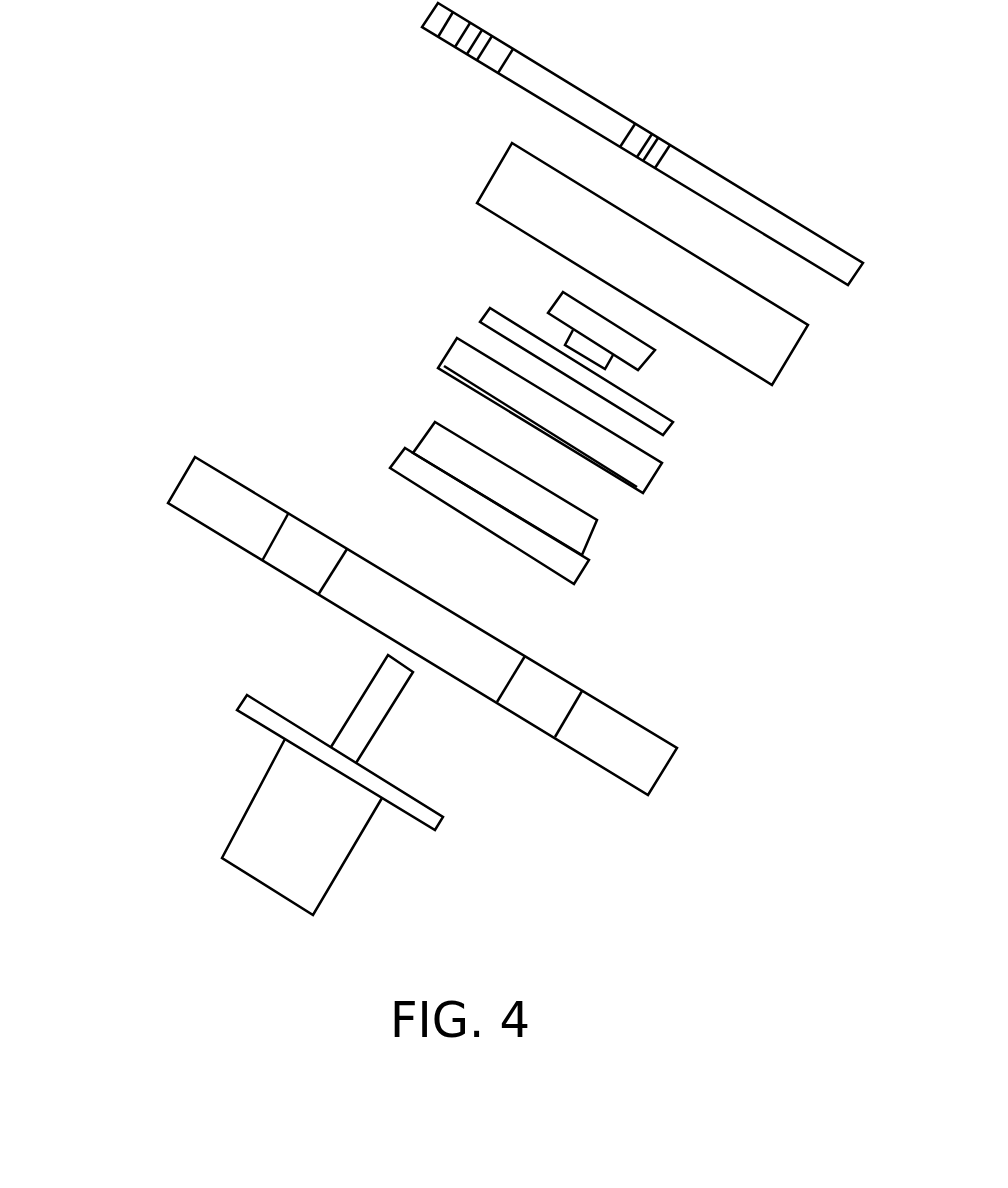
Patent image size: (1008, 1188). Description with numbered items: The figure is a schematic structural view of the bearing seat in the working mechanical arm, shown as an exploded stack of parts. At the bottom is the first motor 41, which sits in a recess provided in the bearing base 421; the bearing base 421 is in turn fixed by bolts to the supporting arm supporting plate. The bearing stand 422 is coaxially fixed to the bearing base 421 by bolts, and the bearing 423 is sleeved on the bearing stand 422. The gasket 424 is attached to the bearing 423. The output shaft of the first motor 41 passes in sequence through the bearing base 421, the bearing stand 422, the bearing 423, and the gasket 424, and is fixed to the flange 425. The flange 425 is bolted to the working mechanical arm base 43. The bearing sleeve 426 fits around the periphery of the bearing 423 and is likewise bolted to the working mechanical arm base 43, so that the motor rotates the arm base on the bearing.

The first motor 41 is at (338, 863).
The working mechanical arm base 43 is at (533, 89).
The bearing base 421 is at (248, 527).
The bearing stand 422 is at (388, 464).
The bearing 423 is at (622, 462).
The gasket 424 is at (484, 317).
The flange 425 is at (632, 355).
The bearing sleeve 426 is at (498, 204).